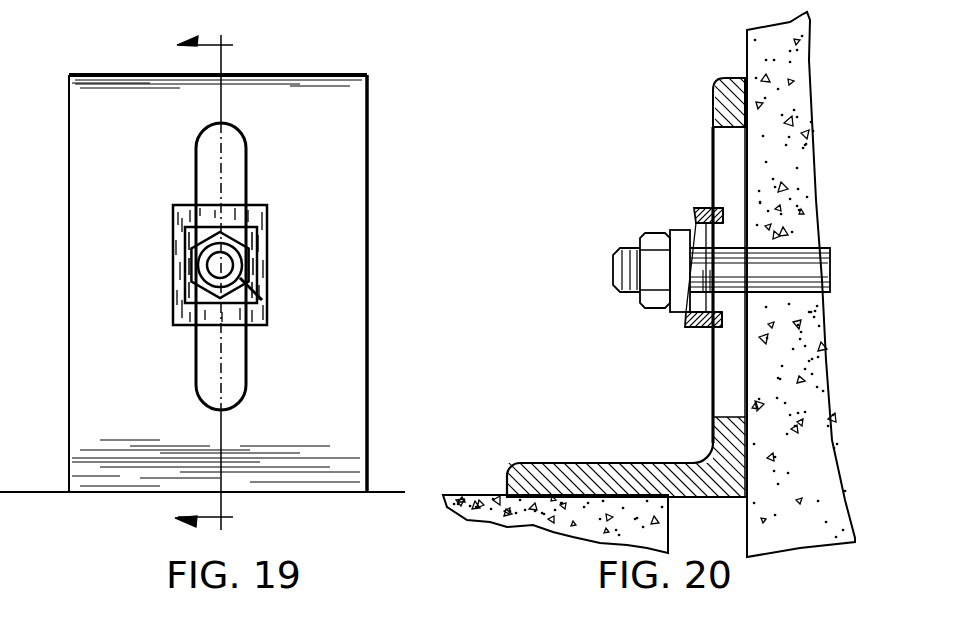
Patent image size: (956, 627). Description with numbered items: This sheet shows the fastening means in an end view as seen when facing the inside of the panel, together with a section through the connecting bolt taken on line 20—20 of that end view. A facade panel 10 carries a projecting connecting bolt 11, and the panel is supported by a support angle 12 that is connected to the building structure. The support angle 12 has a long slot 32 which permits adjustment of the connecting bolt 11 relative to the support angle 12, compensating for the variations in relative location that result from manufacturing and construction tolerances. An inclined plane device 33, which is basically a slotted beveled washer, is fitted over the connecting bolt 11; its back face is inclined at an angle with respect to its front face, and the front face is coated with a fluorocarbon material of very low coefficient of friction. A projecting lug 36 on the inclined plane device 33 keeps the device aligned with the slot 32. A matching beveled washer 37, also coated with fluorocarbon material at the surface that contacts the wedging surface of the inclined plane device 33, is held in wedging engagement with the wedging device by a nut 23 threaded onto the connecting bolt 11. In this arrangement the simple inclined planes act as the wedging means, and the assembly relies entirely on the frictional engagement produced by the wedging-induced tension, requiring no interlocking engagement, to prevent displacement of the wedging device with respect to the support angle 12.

In FIG. 20, the facade panel 10 is at (796, 158).
In FIG. 19, the connecting bolt 11 is at (220, 265).
In FIG. 20, the connecting bolt 11 is at (620, 258).
In FIG. 19, the support angle 12 is at (350, 148).
In FIG. 20, the support angle 12 is at (733, 84).
In FIG. 19, the section line 20— 20 is at (181, 283).
In FIG. 19, the nut 23 is at (260, 297).
In FIG. 20, the nut 23 is at (658, 242).
In FIG. 19, the long slot 32 is at (232, 168).
In FIG. 19, the inclined plane device 33 is at (257, 220).
In FIG. 20, the inclined plane device 33 is at (703, 208).
In FIG. 20, the projecting lug 36 is at (728, 223).
In FIG. 19, the beveled washer 37 is at (192, 238).
In FIG. 20, the beveled washer 37 is at (680, 240).